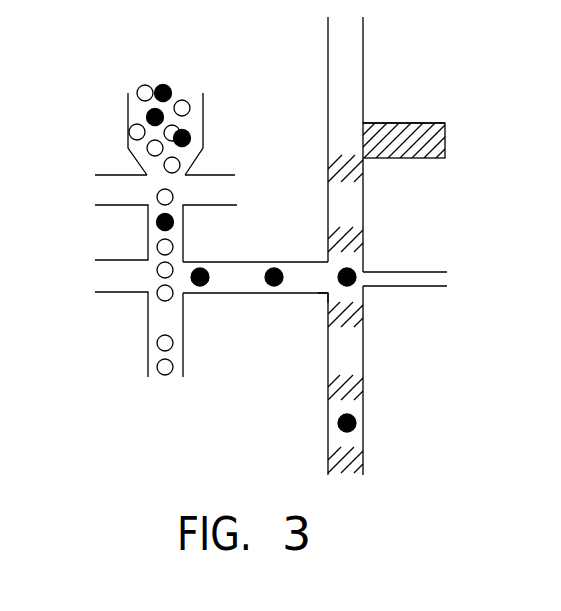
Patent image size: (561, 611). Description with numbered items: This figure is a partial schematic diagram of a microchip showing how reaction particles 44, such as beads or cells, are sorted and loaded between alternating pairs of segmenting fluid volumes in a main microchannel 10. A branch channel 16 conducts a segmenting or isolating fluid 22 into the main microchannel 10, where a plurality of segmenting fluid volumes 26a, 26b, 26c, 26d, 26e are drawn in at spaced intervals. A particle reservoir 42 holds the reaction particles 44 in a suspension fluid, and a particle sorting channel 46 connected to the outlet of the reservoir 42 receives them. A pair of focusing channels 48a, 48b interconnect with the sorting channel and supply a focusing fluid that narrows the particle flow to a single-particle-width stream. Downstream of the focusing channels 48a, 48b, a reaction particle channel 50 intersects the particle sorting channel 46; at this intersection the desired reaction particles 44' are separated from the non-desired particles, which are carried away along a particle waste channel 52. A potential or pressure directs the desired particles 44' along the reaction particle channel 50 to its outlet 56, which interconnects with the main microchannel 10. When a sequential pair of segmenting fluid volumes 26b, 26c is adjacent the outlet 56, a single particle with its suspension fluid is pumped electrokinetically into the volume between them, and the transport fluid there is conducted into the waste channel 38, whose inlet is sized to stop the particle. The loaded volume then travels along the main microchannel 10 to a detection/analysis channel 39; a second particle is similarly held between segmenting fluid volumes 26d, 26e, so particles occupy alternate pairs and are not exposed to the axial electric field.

The main microchannel 10 is at (328, 80).
The branch channel 16 is at (400, 123).
The segmenting or isolating fluid 22 is at (433, 143).
The segmenting fluid volume 26a is at (353, 170).
The segmenting fluid volume 26b is at (360, 243).
The segmenting fluid volume 26c is at (362, 315).
The segmenting fluid volume 26d is at (360, 387).
The segmenting fluid volume 26e is at (360, 458).
The waste channel 38 is at (435, 272).
The detection/analysis channel 39 is at (327, 408).
The particle reservoir 42 is at (128, 120).
The reaction particles 44 is at (170, 105).
The desired reaction particles 44' is at (273, 314).
The particle sorting channel 46 is at (148, 240).
The focusing channel 48a is at (110, 175).
The focusing channel 48b is at (225, 173).
The reaction particle channel 50 is at (273, 262).
The particle waste channel 52 is at (148, 335).
The outlet 56 is at (325, 292).